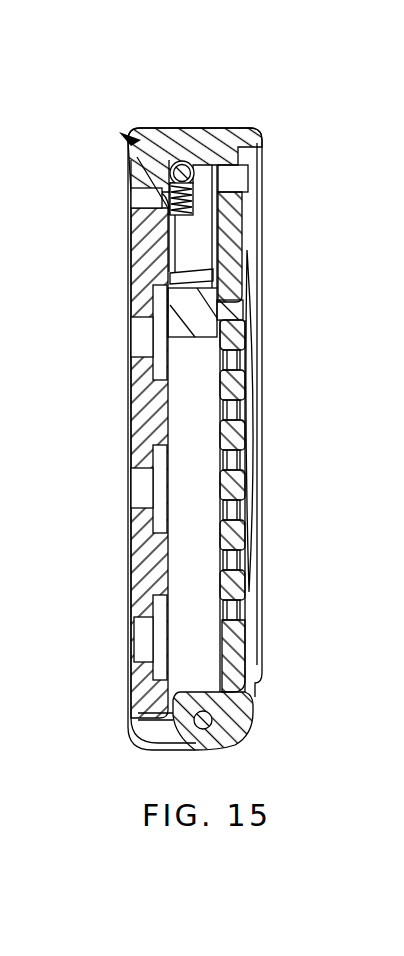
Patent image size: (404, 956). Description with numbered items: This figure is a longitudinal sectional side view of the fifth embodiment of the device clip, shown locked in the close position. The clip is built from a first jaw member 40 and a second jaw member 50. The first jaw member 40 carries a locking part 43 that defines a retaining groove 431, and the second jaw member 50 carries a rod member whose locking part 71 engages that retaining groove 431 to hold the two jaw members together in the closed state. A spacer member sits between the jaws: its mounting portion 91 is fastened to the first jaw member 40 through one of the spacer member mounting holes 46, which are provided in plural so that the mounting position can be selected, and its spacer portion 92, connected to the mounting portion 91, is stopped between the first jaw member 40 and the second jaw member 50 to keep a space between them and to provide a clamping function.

The first jaw member 40 is at (264, 564).
The locking part 43 is at (126, 137).
The retaining groove 431 is at (173, 167).
The locking part 71 is at (182, 172).
The spacer member mounting holes 46 is at (238, 291).
The second jaw member 50 is at (128, 566).
The mounting portion 91 is at (235, 312).
The spacer portion 92 is at (188, 312).